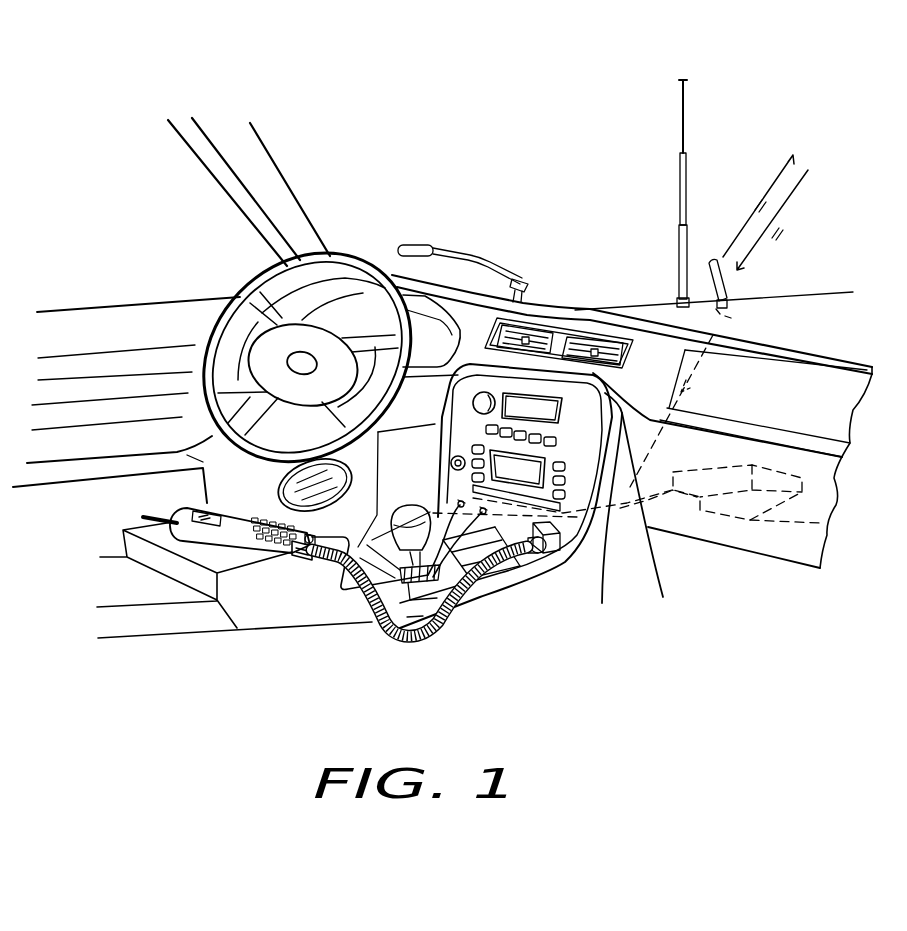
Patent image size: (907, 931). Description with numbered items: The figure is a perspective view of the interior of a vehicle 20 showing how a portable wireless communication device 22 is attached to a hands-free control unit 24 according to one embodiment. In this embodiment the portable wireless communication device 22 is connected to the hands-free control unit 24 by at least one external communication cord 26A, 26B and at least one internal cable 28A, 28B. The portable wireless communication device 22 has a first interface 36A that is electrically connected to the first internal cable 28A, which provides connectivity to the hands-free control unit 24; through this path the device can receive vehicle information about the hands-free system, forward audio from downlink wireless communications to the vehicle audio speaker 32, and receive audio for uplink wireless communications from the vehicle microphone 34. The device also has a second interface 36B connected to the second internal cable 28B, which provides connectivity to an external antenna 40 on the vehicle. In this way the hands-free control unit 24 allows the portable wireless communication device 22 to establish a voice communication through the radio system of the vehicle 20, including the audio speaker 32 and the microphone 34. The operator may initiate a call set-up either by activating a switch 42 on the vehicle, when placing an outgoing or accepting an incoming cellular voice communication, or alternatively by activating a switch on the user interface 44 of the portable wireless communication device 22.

The vehicle 20 is at (850, 362).
The portable wireless communication device 22 is at (216, 590).
The hands-free control unit 24 is at (644, 496).
The external communication cord 26A is at (337, 590).
The external communication cord 26B is at (345, 590).
The first internal cable 28A is at (688, 457).
The second internal cable 28B is at (700, 395).
The audio speaker 32 is at (280, 487).
The microphone 34 is at (477, 258).
The first interface 36A is at (297, 549).
The second interface 36B is at (312, 536).
The external antenna 40 is at (725, 288).
The switch 42 is at (452, 468).
The user interface 44 is at (258, 520).